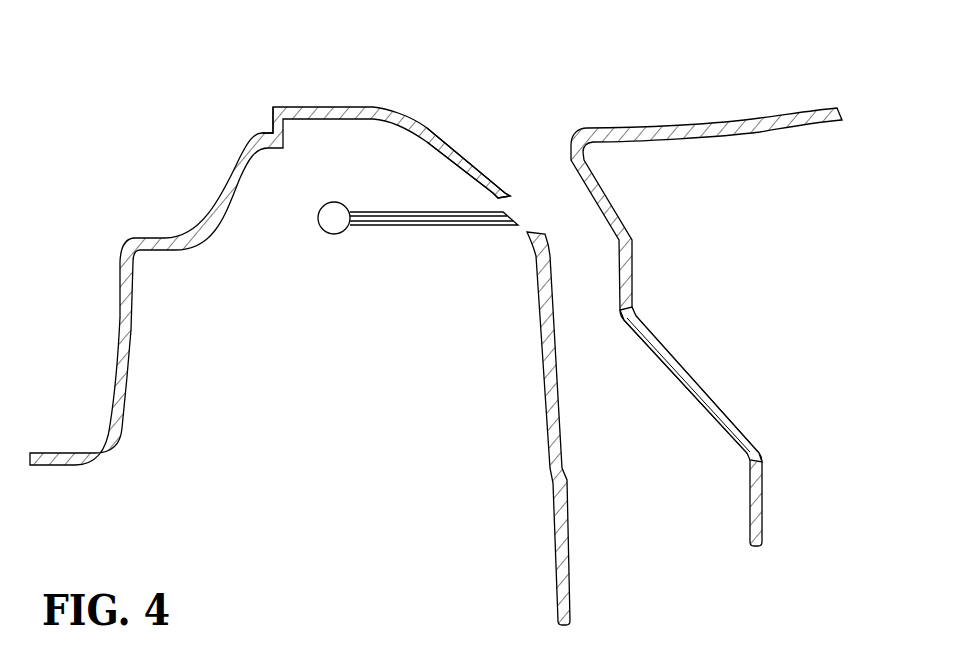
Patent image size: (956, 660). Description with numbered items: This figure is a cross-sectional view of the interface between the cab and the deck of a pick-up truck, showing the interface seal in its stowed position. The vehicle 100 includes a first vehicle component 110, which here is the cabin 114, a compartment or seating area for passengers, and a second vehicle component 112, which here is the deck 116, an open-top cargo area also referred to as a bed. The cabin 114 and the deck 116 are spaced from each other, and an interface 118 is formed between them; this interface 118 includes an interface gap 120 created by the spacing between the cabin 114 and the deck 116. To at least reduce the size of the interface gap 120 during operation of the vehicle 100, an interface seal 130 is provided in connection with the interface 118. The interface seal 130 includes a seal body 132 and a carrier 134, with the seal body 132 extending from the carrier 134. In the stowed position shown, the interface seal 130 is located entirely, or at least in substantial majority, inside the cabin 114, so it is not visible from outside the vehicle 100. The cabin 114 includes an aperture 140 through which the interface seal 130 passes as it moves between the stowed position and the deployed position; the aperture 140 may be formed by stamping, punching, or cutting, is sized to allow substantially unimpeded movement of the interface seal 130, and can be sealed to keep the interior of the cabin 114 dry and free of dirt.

The vehicle 100 is at (270, 239).
The first vehicle component 110 is at (292, 85).
The second vehicle component 112 is at (706, 287).
The cabin 114 is at (273, 107).
The deck 116 is at (773, 117).
The interface 118 is at (530, 128).
The interface gap 120 is at (500, 145).
The interface seal 130 is at (388, 237).
The seal body 132 is at (376, 212).
The carrier 134 is at (333, 234).
The aperture 140 is at (518, 235).